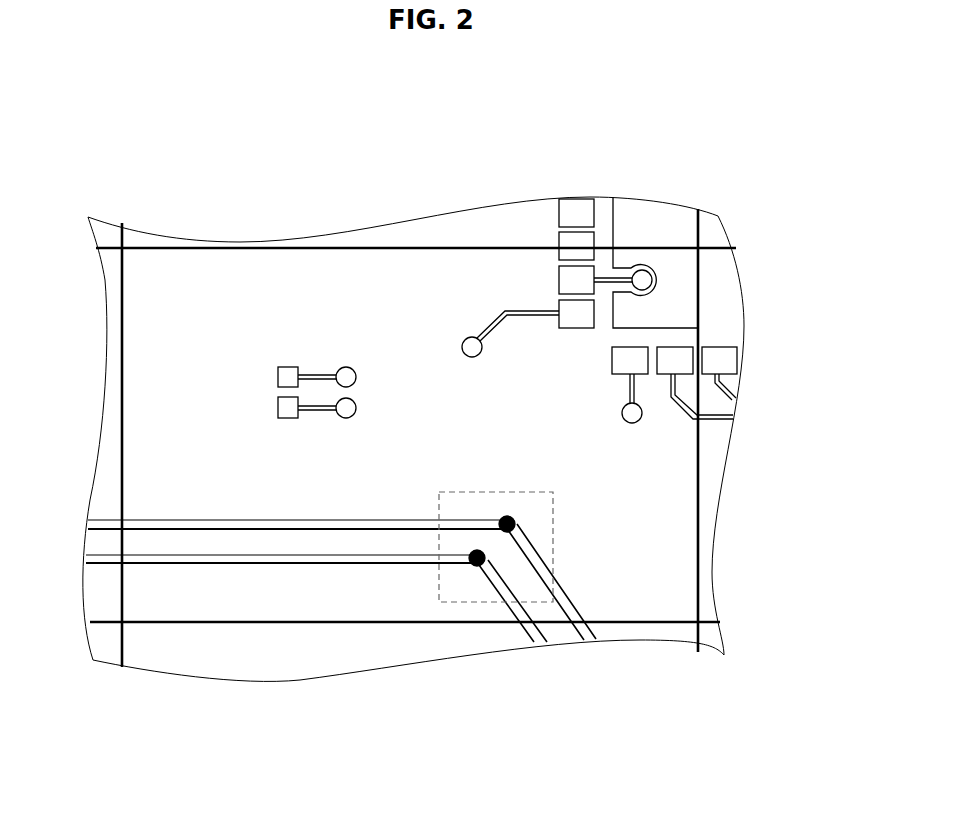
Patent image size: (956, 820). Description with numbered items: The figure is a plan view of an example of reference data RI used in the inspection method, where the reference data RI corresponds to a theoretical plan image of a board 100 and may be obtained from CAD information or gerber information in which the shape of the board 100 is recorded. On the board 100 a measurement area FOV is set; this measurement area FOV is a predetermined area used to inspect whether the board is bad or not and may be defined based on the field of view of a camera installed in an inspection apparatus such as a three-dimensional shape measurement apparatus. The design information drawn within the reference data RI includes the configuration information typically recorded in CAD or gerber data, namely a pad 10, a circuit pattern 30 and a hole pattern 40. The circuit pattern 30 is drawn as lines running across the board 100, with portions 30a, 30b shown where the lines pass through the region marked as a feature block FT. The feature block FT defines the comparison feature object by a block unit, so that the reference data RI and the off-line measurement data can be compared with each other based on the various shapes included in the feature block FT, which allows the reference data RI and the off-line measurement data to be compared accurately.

The board 100 is at (657, 189).
The pad 10 is at (288, 367).
The hole pattern 40 is at (346, 366).
The circuit pattern 30 is at (167, 558).
The first signal line 30a is at (515, 521).
The second signal line 30b is at (475, 565).
The feature block FT is at (455, 603).
The measurement area FOV is at (188, 288).
The reference data RI is at (430, 122).